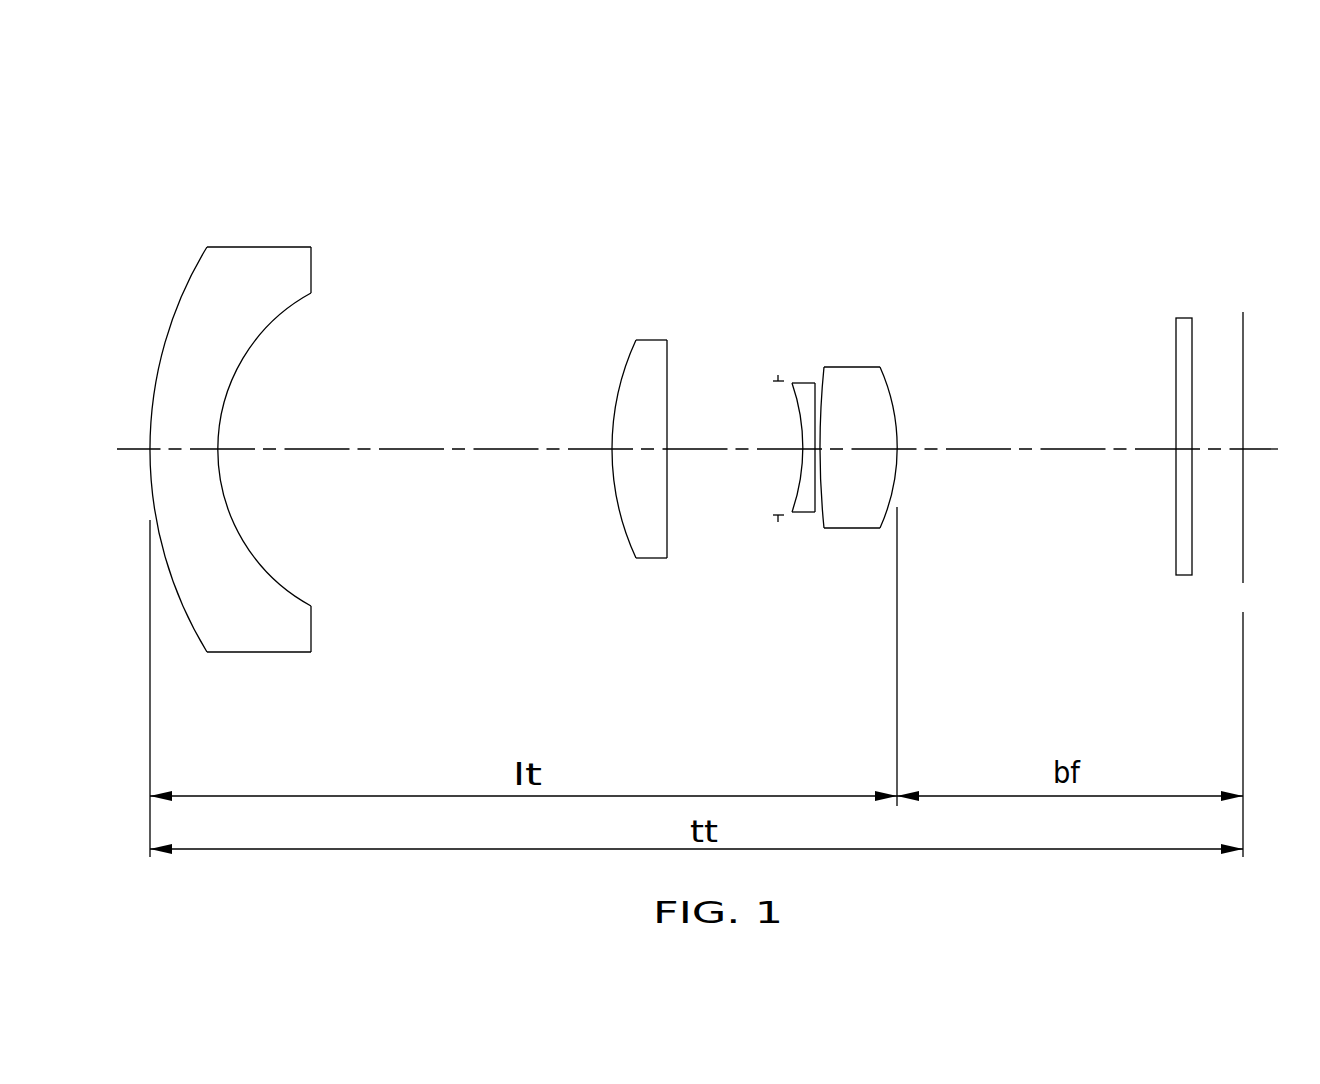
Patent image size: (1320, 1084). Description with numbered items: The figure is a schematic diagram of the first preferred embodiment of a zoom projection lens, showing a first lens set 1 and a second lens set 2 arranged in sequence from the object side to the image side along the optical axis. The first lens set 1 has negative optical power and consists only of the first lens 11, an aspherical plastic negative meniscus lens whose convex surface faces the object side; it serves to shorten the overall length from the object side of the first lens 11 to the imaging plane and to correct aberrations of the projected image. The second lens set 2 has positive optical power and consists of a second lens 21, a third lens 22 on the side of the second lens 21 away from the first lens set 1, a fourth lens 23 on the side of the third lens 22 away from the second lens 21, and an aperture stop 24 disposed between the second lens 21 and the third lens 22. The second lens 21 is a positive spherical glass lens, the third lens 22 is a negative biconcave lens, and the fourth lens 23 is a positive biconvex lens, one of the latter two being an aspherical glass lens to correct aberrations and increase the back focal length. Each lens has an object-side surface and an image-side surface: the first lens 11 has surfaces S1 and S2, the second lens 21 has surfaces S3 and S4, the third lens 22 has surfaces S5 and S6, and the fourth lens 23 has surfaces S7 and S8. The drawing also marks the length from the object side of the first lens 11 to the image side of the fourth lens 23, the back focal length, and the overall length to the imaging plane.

The first lens set 1 is at (312, 138).
The first lens 11 is at (265, 258).
The second lens set 2 is at (895, 200).
The second lens 21 is at (648, 346).
The third lens 22 is at (805, 385).
The fourth lens 23 is at (857, 378).
The aperture stop 24 is at (779, 378).
The object-side surface of the first lens S1 is at (177, 598).
The image-side surface of the first lens S2 is at (275, 582).
The object-side surface of the second lens S3 is at (622, 515).
The image-side surface of the second lens S4 is at (667, 515).
The object-side surface of the third lens S5 is at (800, 465).
The image-side surface of the third lens S6 is at (813, 488).
The object-side surface of the fourth lens S7 is at (820, 497).
The image-side surface of the fourth lens S8 is at (893, 492).